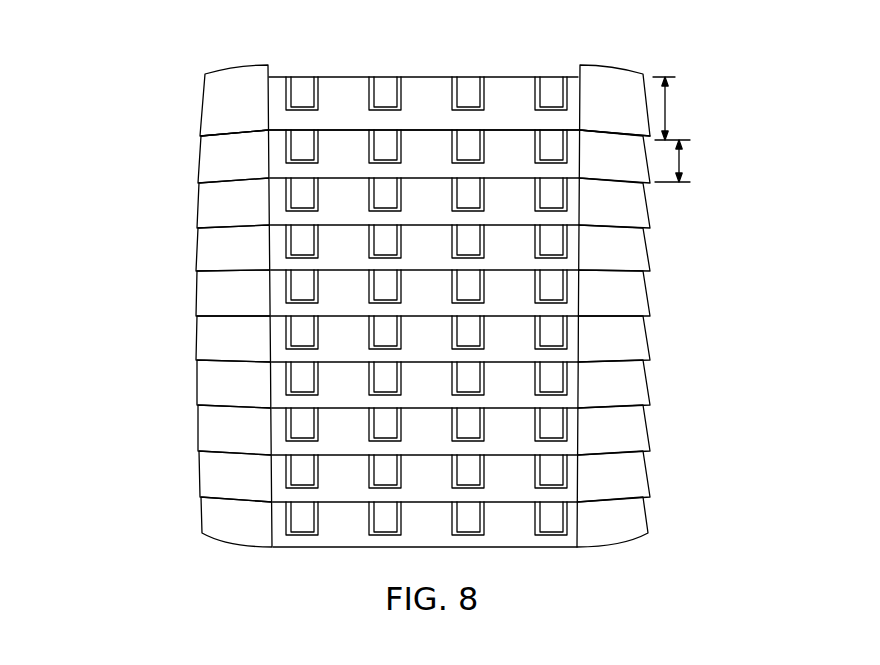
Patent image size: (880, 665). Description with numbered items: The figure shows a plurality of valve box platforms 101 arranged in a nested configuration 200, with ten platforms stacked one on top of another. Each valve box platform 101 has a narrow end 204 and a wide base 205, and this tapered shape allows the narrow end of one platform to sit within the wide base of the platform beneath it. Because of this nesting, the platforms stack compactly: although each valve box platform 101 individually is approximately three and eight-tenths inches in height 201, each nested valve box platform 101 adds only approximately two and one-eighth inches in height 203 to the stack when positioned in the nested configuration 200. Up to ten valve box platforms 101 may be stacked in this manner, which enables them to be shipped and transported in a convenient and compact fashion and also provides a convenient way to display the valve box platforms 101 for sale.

The valve box platform 101 is at (190, 99).
The nested configuration 200 is at (190, 151).
The height 201 is at (667, 110).
The height 203 is at (681, 165).
The narrow end 204 is at (204, 73).
The wide base 205 is at (198, 134).